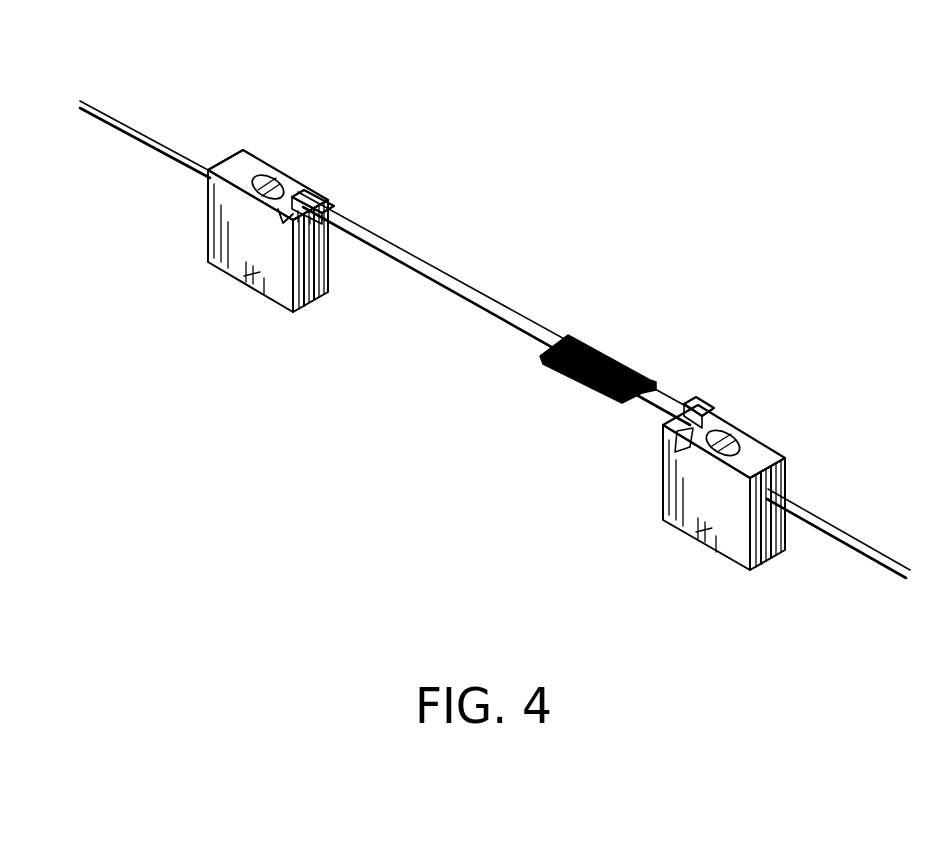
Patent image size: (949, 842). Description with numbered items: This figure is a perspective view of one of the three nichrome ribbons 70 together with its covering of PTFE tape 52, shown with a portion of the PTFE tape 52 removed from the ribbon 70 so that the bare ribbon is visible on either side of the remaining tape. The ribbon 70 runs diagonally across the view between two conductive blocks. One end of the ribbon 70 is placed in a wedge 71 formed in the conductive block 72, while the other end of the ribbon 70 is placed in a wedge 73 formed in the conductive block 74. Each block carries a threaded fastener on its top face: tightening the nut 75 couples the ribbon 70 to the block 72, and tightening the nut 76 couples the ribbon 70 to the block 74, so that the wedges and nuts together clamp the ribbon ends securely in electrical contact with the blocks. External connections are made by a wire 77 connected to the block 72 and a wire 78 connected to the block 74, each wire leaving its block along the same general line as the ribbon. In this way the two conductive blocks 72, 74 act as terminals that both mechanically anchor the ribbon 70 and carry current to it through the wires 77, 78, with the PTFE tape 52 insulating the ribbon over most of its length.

The PTFE tape 52 is at (597, 350).
The nichrome ribbon 70 is at (490, 310).
The wedge 71 is at (707, 422).
The conductive block 72 is at (690, 530).
The wedge 73 is at (302, 187).
The conductive block 74 is at (243, 270).
The nut 75 is at (737, 437).
The nut 76 is at (259, 180).
The wire 77 is at (867, 557).
The wire 78 is at (173, 155).